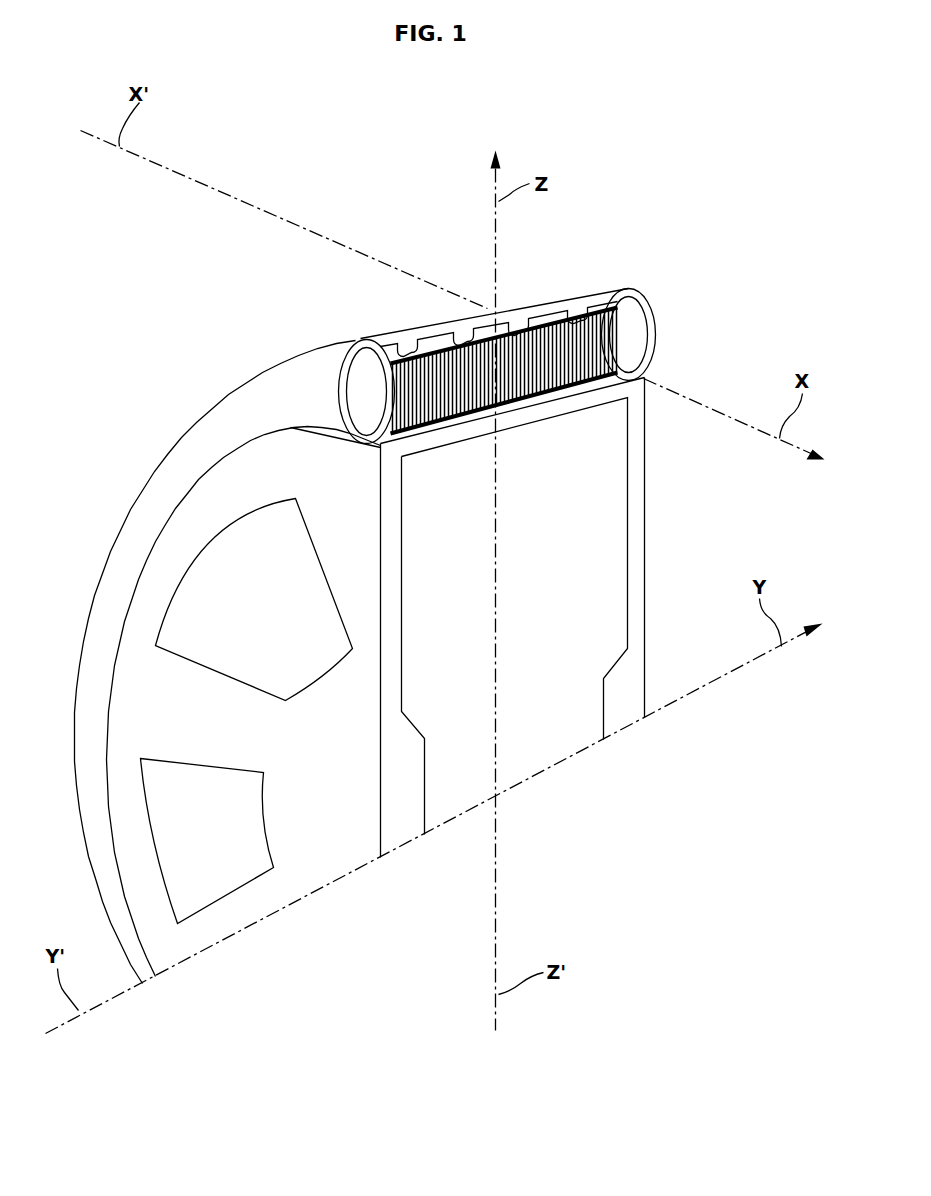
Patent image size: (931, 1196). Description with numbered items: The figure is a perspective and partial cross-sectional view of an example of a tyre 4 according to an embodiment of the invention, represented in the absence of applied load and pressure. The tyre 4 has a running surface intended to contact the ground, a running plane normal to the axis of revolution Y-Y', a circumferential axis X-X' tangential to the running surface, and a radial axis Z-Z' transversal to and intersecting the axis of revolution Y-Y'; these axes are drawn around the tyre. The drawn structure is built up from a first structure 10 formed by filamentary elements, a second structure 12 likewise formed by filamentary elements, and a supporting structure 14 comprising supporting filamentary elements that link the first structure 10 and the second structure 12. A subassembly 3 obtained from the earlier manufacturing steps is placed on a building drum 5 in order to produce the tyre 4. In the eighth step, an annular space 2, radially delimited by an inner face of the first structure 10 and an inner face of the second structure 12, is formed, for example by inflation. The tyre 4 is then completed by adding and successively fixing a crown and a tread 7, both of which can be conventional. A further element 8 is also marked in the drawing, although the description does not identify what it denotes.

The annular space 2 is at (362, 380).
The subassembly 3 is at (366, 384).
The tyre 4 is at (141, 314).
The building drum 5 is at (182, 552).
The tread 7 is at (547, 290).
The sleeve 8 is at (622, 288).
The first structure 10 is at (399, 345).
The second structure 12 is at (370, 401).
The supporting structure 14 is at (630, 348).